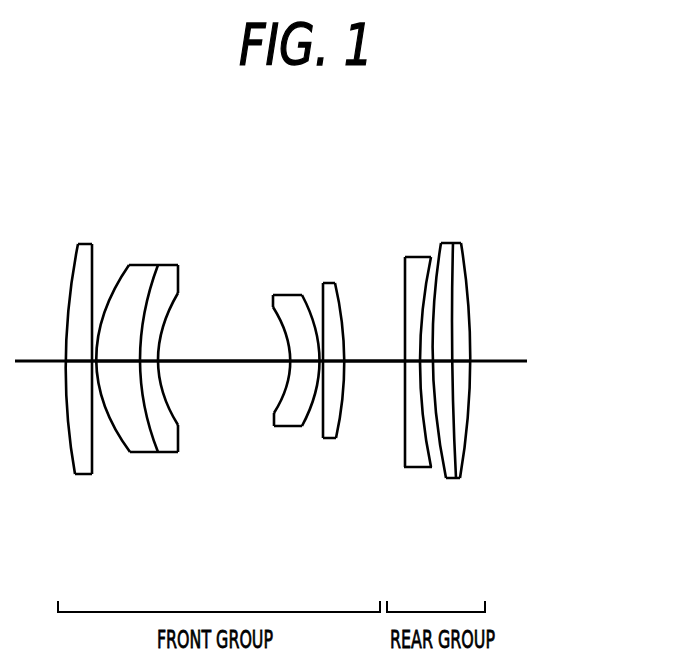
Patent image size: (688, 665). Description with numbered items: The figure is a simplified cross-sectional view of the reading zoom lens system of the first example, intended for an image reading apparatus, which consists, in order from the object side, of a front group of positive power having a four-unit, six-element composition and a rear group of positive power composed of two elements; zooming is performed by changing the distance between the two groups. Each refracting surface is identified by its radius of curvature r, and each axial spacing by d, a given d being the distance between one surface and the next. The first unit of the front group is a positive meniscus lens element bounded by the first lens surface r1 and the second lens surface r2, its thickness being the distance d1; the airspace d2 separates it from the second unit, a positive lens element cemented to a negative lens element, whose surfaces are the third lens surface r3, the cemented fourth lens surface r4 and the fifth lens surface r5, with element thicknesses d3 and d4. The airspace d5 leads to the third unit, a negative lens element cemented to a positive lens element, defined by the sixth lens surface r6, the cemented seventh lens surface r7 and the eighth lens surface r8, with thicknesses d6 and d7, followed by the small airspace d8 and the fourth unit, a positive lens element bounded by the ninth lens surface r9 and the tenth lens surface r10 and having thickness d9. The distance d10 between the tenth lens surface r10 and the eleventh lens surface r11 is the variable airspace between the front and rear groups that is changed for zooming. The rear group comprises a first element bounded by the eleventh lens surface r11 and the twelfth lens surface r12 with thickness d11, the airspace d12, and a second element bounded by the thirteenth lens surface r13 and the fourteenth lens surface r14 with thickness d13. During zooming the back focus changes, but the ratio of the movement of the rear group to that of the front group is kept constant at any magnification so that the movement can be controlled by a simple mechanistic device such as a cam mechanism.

The first lens surface r1 is at (78, 244).
The second lens surface r2 is at (92, 244).
The third lens surface r3 is at (129, 265).
The fourth lens surface r4 is at (158, 265).
The fifth lens surface r5 is at (178, 265).
The sixth lens surface r6 is at (270, 295).
The seventh lens surface r7 is at (288, 295).
The eighth lens surface r8 is at (323, 283).
The ninth lens surface r9 is at (335, 283).
The tenth lens surface r10 is at (404, 257).
The eleventh lens surface r11 is at (432, 257).
The twelfth lens surface r12 is at (443, 245).
The thirteenth lens surface r13 is at (452, 245).
The fourteenth lens surface r14 is at (459, 245).
The distance between first and second lens surfaces d1 is at (70, 362).
The distance between second and third lens surfaces d2 is at (93, 362).
The distance between third and fourth lens surfaces d3 is at (115, 362).
The distance between fourth and fifth lens surfaces d4 is at (146, 362).
The distance between fifth and sixth lens surfaces d5 is at (223, 362).
The distance between sixth and seventh lens surfaces d6 is at (290, 362).
The distance between seventh and eighth lens surfaces d7 is at (320, 363).
The distance between eighth and ninth lens surfaces d8 is at (333, 363).
The distance between ninth and tenth lens surfaces d9 is at (373, 362).
The distance between tenth and eleventh lens surfaces d10 is at (378, 362).
The distance between eleventh and twelfth lens surfaces d11 is at (410, 362).
The distance between twelfth and thirteenth lens surfaces d12 is at (448, 362).
The distance between thirteenth and fourteenth lens surfaces d13 is at (471, 362).